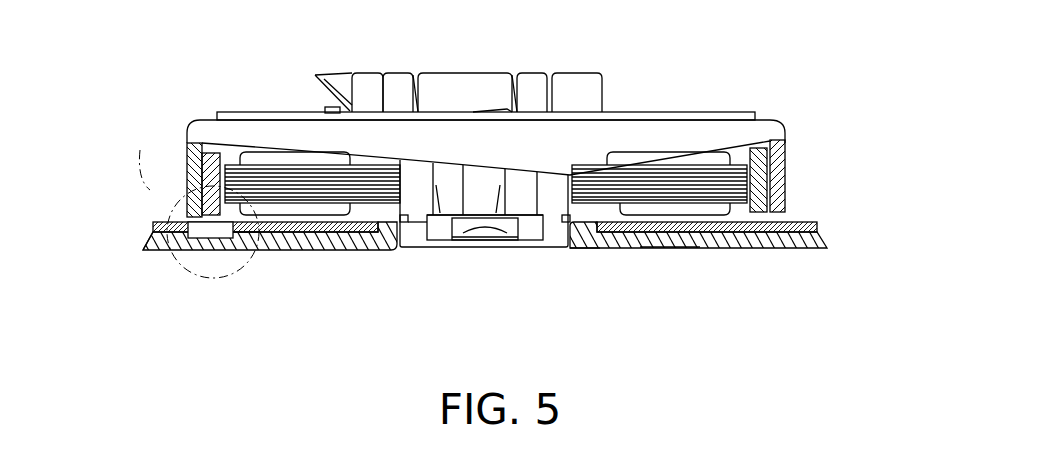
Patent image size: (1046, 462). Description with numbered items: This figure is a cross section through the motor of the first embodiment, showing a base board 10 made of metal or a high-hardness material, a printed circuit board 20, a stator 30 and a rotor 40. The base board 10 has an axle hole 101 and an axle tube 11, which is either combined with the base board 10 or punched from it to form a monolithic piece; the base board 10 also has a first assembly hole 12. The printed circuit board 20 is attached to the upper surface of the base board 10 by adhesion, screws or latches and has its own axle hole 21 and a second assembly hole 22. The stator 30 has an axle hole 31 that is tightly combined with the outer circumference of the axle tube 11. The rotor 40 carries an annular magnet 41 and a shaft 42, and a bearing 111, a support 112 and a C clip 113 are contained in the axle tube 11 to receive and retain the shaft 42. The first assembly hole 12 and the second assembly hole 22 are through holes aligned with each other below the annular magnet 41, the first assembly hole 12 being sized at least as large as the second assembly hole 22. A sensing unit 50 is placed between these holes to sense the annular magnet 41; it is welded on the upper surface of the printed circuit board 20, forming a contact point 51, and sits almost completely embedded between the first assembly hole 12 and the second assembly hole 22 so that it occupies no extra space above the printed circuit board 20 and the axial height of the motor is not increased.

The base board 10 is at (805, 248).
The first assembly hole 12 is at (178, 255).
The printed circuit board 20 is at (801, 231).
The axle hole 21 is at (640, 247).
The second assembly hole 22 is at (246, 237).
The stator 30 is at (708, 185).
The axle hole 31 is at (590, 173).
The rotor 40 is at (720, 130).
The annular magnet 41 is at (210, 172).
The shaft 42 is at (484, 230).
The sensing unit 50 is at (212, 238).
The contact point 51 is at (188, 220).
The axle tube 11 is at (554, 232).
The axle hole 101 is at (595, 250).
The bearing 111 is at (521, 187).
The support 112 is at (432, 234).
The C clip 113 is at (452, 227).